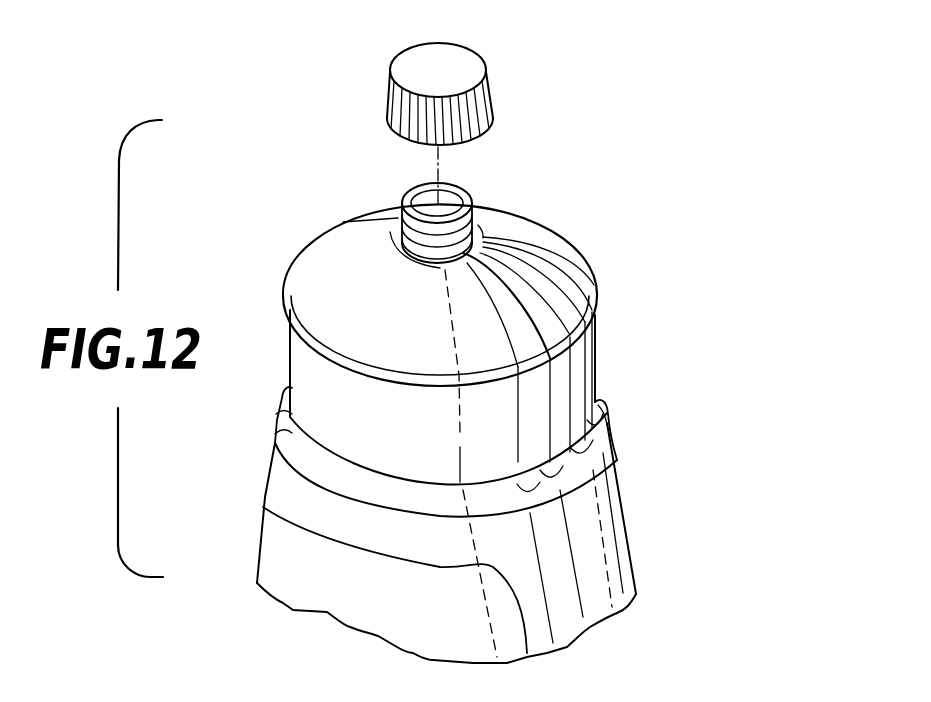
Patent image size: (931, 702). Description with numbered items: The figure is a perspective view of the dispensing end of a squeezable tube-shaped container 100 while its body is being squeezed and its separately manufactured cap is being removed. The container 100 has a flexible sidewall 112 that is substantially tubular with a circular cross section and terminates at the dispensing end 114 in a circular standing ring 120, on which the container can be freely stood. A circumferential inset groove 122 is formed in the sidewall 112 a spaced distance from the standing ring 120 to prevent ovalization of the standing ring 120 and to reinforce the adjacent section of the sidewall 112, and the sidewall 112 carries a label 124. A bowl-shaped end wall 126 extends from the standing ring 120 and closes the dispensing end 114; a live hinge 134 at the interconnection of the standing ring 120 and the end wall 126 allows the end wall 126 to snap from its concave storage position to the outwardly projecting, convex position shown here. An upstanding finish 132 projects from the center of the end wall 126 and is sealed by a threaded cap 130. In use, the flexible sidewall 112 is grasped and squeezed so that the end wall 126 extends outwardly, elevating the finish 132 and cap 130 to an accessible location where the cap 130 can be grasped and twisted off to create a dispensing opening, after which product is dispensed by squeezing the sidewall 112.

The tube-shaped container 100 is at (605, 487).
The flexible sidewall 112 is at (588, 573).
The dispensing end 114 is at (348, 243).
The standing ring 120 is at (285, 293).
The circumferential inset groove 122 is at (605, 410).
The label 124 is at (285, 543).
The bowl-shaped end wall 126 is at (540, 244).
The cap 130 is at (467, 70).
The upstanding finish 132 is at (470, 197).
The live hinge 134 is at (596, 313).